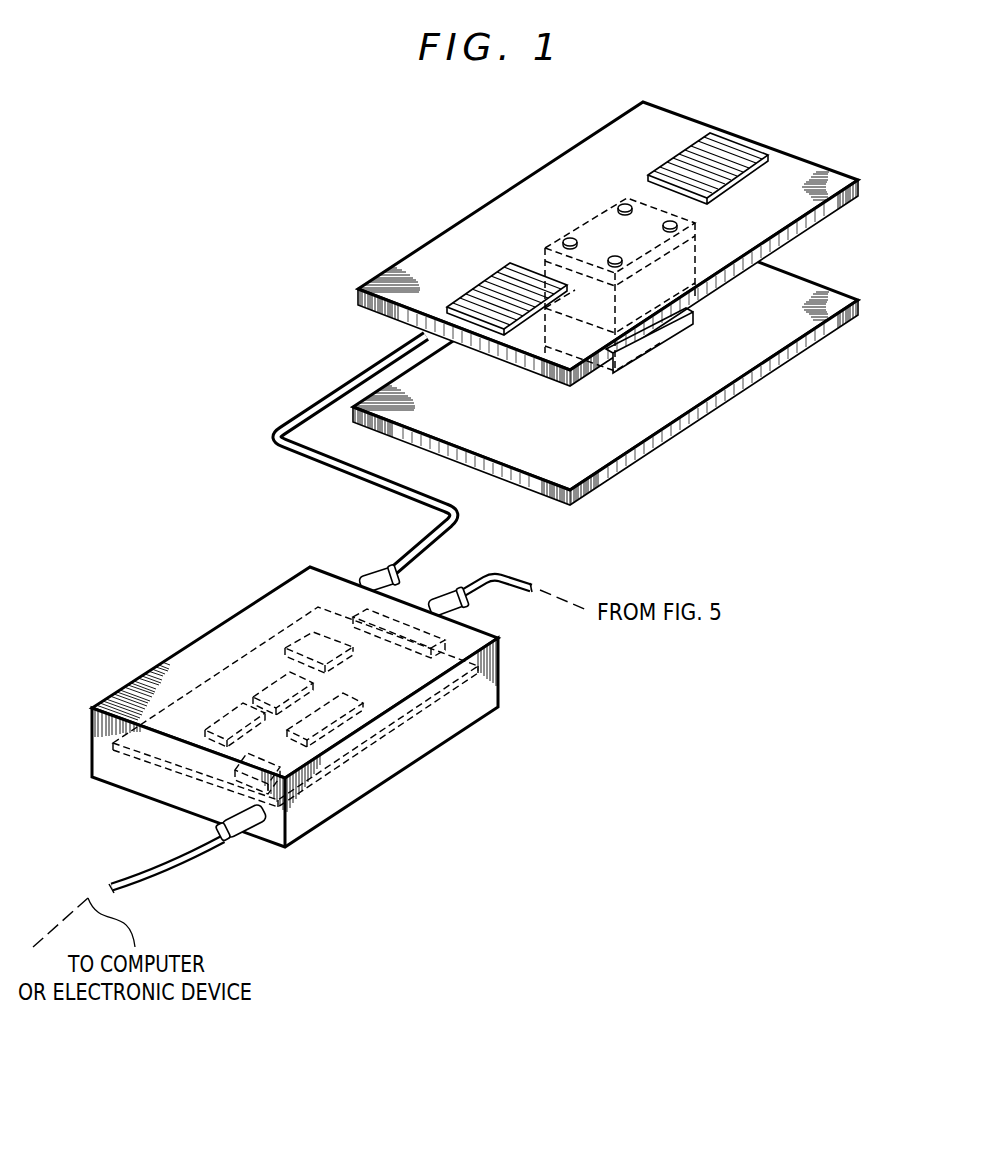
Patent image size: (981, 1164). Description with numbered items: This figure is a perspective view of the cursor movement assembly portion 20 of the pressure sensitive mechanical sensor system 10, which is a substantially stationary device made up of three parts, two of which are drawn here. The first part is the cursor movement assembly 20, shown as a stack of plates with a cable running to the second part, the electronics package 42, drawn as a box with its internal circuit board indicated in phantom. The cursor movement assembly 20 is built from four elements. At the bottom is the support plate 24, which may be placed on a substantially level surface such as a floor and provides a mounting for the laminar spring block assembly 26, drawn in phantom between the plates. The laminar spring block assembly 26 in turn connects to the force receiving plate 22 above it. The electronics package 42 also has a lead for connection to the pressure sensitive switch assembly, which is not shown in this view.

The pressure sensitive mechanical sensor system 10 is at (738, 100).
The cursor movement assembly portion 20 is at (814, 148).
The force receiving plate 22 is at (582, 156).
The support plate 24 is at (722, 368).
The laminar spring block assembly 26 is at (579, 210).
The electronics package 42 is at (200, 648).